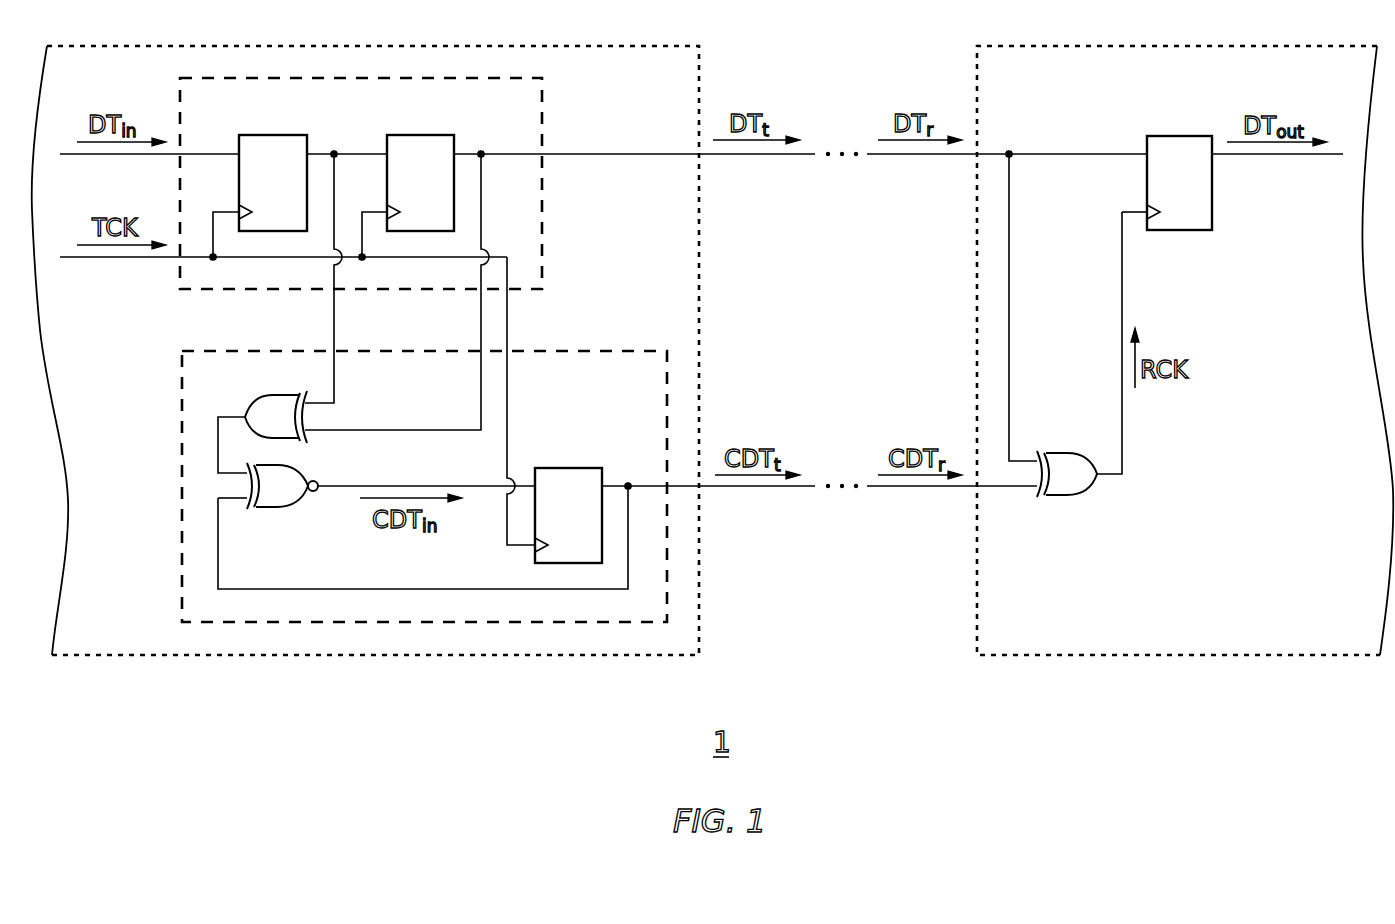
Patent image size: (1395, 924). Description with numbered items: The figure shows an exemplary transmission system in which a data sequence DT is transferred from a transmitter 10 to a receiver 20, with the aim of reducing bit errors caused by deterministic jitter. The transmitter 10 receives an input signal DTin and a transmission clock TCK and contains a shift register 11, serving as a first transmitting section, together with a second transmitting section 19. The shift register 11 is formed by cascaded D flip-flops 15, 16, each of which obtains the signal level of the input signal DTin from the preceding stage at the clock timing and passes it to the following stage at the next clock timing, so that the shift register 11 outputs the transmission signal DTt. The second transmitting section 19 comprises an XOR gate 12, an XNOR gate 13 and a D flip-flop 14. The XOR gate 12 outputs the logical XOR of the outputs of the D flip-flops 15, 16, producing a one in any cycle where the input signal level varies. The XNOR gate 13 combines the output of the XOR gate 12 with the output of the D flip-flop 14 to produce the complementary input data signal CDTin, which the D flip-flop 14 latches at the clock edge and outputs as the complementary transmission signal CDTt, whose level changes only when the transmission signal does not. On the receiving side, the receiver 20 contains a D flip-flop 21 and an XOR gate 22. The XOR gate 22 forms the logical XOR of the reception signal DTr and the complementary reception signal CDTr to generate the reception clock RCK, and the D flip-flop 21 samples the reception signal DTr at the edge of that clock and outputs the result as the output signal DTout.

The transmitter 10 is at (355, 47).
The shift register 11 is at (543, 235).
The XOR gate 12 is at (252, 406).
The XNOR gate 13 is at (304, 470).
The D flip-flop 14 is at (572, 468).
The D flip-flop 15 is at (270, 135).
The D flip-flop 16 is at (417, 135).
The second transmitting section 19 is at (182, 552).
The receiver 20 is at (1177, 47).
The D flip-flop 21 is at (1183, 230).
The XOR gate 22 is at (1089, 491).